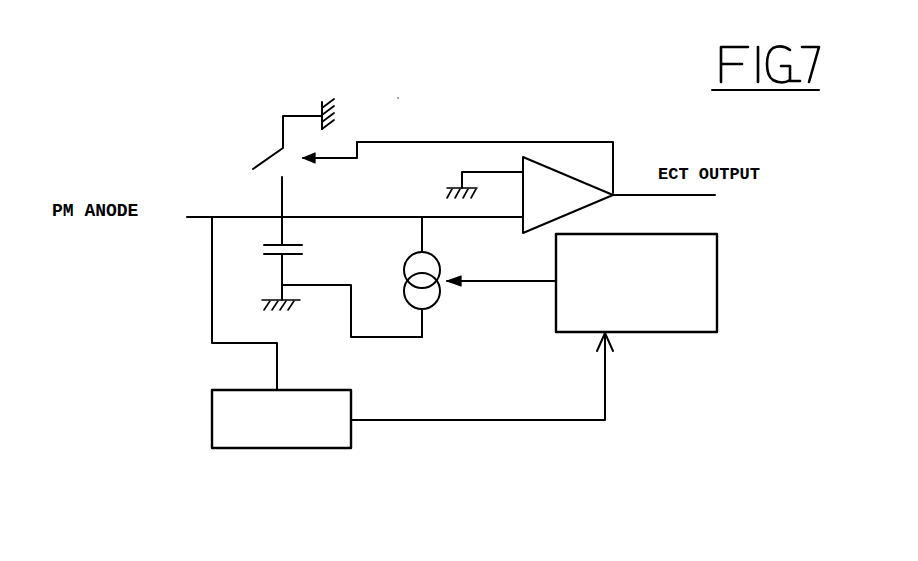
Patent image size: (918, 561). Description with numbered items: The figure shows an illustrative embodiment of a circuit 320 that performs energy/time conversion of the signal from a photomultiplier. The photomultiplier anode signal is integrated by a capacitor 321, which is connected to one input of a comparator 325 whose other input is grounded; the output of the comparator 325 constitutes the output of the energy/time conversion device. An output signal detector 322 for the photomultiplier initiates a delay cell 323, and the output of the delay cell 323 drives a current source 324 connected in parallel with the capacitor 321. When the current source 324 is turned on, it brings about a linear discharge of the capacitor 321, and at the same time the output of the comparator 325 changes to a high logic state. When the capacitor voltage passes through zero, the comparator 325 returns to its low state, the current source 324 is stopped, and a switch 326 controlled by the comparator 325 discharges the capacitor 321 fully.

The circuit 320 is at (398, 98).
The capacitor 321 is at (342, 277).
The output signal detector 322 is at (213, 413).
The delay cell 323 is at (717, 290).
The current source 324 is at (438, 310).
The comparator 325 is at (592, 204).
The switch 326 is at (263, 148).